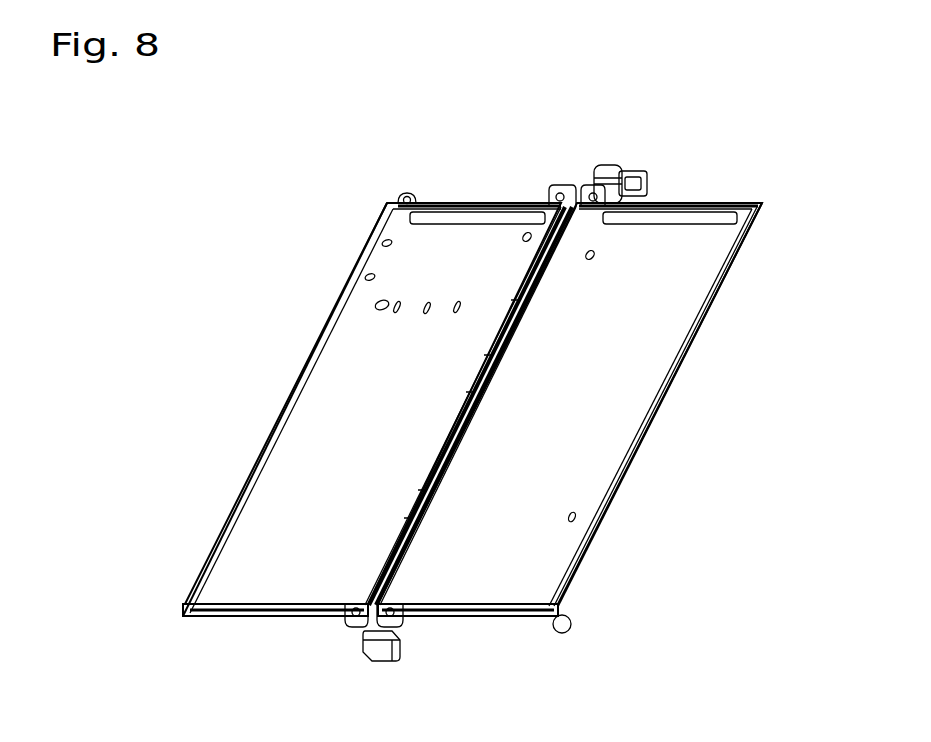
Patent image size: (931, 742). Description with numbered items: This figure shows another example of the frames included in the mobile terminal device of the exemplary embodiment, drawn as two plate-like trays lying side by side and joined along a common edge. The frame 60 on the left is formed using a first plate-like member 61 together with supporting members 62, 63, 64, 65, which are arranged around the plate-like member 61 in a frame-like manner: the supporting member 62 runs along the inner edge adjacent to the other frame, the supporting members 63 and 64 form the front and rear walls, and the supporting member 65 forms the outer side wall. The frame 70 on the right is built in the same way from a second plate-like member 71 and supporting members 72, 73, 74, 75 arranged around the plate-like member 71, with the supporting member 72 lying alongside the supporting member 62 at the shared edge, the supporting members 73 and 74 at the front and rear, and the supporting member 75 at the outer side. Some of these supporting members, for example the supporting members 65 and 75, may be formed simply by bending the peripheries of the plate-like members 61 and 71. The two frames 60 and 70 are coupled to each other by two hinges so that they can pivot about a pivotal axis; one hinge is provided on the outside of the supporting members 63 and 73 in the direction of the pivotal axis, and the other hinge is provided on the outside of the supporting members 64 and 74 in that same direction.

The frame 60 is at (489, 105).
The plate-like member 61 is at (312, 408).
The supporting member 62 is at (463, 418).
The supporting member 63 is at (458, 205).
The supporting member 64 is at (272, 614).
The supporting member 65 is at (323, 338).
The frame 70 is at (696, 115).
The plate-like member 71 is at (626, 432).
The supporting member 72 is at (500, 378).
The supporting member 73 is at (680, 203).
The supporting member 74 is at (470, 614).
The supporting member 75 is at (685, 372).